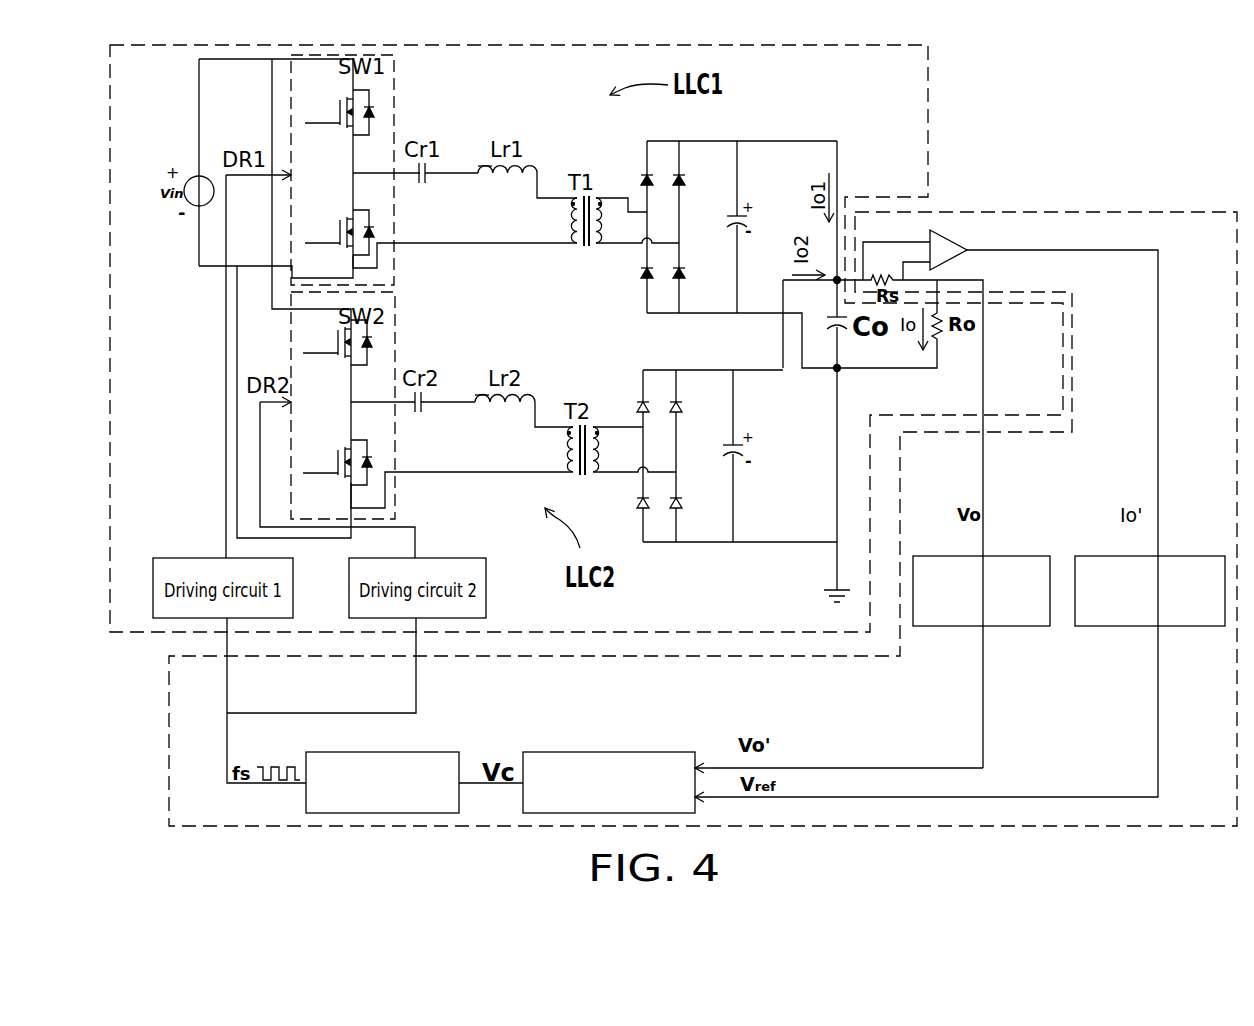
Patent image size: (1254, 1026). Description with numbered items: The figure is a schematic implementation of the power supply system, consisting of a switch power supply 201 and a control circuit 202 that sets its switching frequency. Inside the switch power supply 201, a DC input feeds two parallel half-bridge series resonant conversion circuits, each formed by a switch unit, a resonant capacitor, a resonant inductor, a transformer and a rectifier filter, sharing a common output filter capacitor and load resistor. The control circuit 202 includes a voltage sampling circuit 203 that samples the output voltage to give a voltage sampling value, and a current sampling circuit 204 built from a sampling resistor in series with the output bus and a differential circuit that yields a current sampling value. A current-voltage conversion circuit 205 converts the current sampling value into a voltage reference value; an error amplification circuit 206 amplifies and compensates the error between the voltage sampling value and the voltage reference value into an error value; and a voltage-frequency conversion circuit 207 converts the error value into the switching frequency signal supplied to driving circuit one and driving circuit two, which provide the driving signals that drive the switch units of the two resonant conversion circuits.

The switch power supply 201 is at (930, 91).
The control circuit 202 is at (1153, 213).
The voltage sampling circuit 203 is at (1010, 626).
The current sampling circuit 204 is at (968, 263).
The current-voltage conversion circuit 205 is at (1130, 626).
The error amplification circuit 206 is at (583, 752).
The voltage-frequency conversion circuit 207 is at (420, 752).